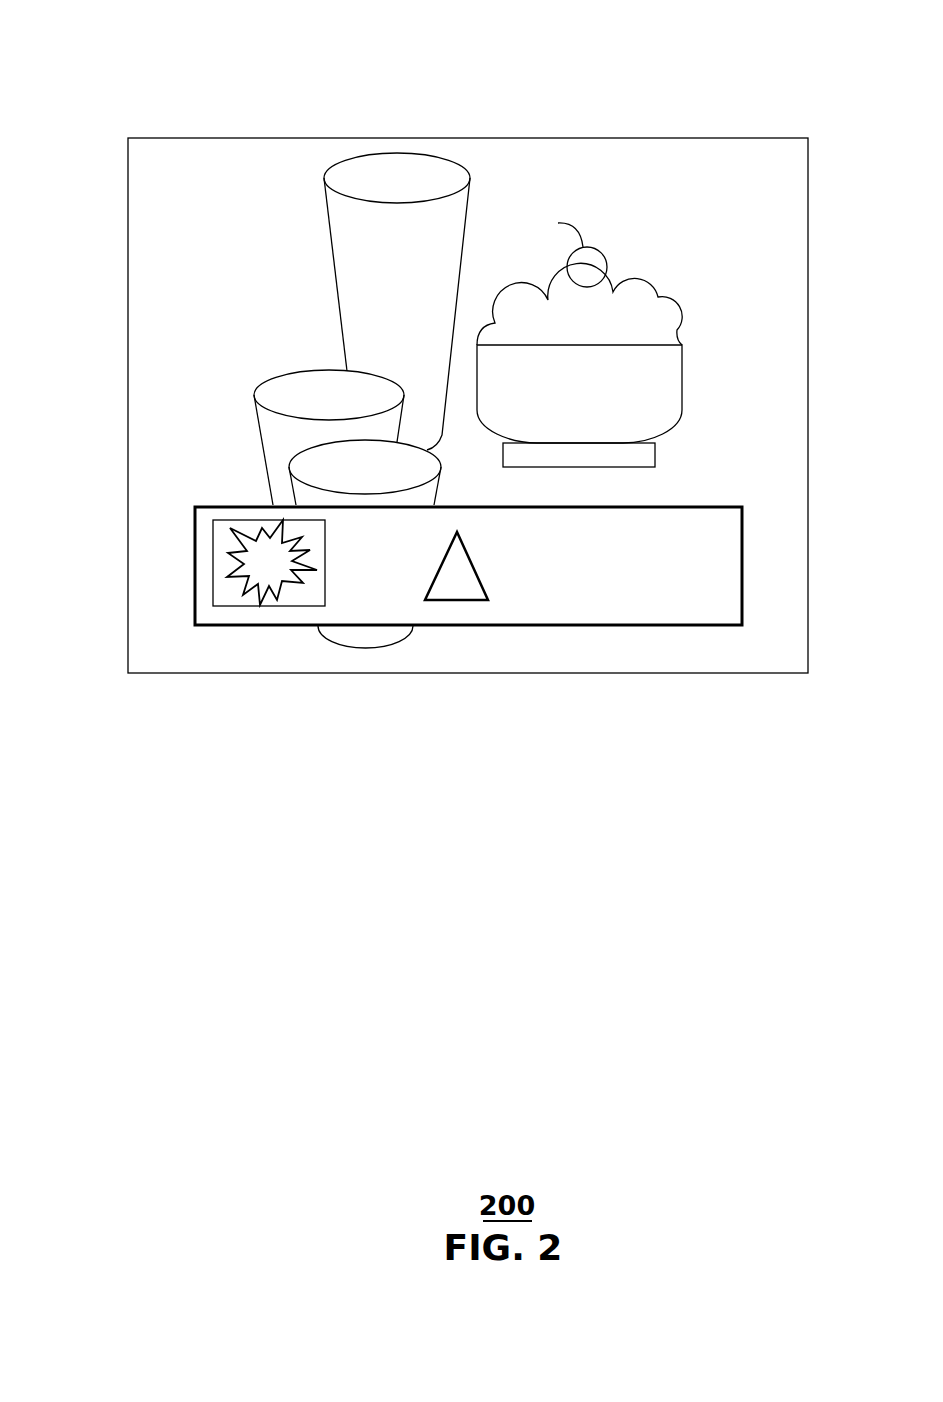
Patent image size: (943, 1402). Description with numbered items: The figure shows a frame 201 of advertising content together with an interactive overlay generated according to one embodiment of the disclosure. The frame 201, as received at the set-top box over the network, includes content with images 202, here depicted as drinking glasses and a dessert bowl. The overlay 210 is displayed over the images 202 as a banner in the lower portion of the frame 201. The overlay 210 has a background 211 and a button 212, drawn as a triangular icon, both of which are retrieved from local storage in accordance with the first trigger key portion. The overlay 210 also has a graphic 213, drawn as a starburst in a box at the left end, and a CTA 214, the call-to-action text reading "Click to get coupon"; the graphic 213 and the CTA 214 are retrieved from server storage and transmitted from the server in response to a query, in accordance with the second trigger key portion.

The frame 201 is at (312, 78).
The images 202 is at (750, 315).
The overlay 210 is at (180, 577).
The background 211 is at (707, 600).
The button 212 is at (455, 600).
The graphic 213 is at (290, 608).
The CTA 214 is at (567, 597).